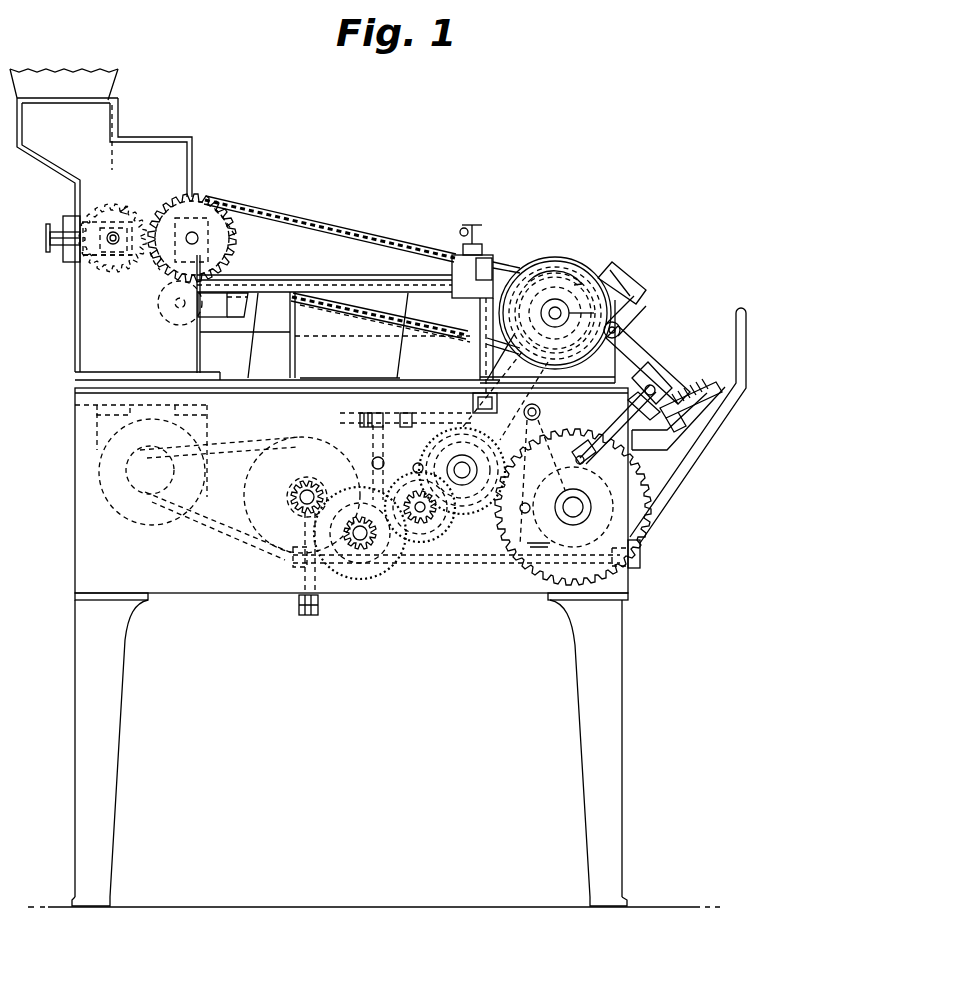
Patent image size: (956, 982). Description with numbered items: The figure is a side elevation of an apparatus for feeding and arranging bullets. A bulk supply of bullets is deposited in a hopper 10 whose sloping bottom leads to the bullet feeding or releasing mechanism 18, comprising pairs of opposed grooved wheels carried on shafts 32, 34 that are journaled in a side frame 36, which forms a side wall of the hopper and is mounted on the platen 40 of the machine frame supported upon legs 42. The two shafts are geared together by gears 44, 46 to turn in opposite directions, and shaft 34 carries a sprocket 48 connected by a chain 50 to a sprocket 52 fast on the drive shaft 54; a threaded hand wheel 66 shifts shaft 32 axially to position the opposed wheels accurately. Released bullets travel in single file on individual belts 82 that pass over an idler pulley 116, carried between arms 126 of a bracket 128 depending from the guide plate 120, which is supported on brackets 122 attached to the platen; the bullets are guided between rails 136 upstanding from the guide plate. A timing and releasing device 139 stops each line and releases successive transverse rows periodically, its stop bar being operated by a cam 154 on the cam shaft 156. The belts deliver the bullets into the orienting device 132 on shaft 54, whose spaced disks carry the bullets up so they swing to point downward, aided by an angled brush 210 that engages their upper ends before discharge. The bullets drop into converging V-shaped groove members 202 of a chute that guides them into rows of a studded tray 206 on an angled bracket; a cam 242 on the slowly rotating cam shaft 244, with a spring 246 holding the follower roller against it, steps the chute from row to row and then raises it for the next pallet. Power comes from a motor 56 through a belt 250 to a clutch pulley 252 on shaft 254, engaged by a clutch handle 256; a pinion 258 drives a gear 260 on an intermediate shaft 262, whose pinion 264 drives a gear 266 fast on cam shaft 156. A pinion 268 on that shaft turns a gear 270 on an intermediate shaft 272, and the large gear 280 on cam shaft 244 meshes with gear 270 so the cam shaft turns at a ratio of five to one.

The hopper 10 is at (93, 112).
The bullet feeding or releasing mechanism 18 is at (160, 199).
The shaft 32 is at (113, 244).
The shaft 34 is at (194, 232).
The side frame 36 is at (77, 332).
The platen 40 is at (82, 398).
The legs 42 is at (112, 778).
The gear 44 is at (107, 280).
The gear 46 is at (160, 270).
The sprocket 48 is at (228, 226).
The chain 50 is at (352, 233).
The sprocket 52 is at (512, 262).
The drive shaft 54 is at (553, 307).
The motor 56 is at (137, 525).
The threaded hand wheel 66 is at (50, 226).
The belts 82 is at (259, 282).
The idler pulley 116 is at (165, 320).
The guide plate 120 is at (370, 291).
The brackets 122 is at (398, 366).
The arms 126 is at (212, 310).
The bracket 128 is at (237, 308).
The orienting device 132 is at (587, 233).
The rails 136 is at (300, 263).
The timing and releasing device 139 is at (480, 213).
The cam 154 is at (445, 548).
The cam shaft 156 is at (422, 520).
The V-shaped groove members 202 is at (665, 343).
The studded tray 206 is at (707, 394).
The brush 210 is at (608, 264).
The cam 242 is at (650, 548).
The cam shaft 244 is at (630, 568).
The spring 246 is at (575, 518).
The belt 250 is at (212, 525).
The clutch pulley 252 is at (250, 495).
The shaft 254 is at (305, 505).
The clutch handle 256 is at (690, 475).
The pinion 258 is at (312, 476).
The gear 260 is at (362, 552).
The intermediate shaft 262 is at (360, 547).
The pinion 264 is at (383, 513).
The gear 266 is at (470, 572).
The pinion 268 is at (440, 545).
The gear 270 is at (398, 428).
The intermediate shaft 272 is at (461, 462).
The large gear 280 is at (650, 528).